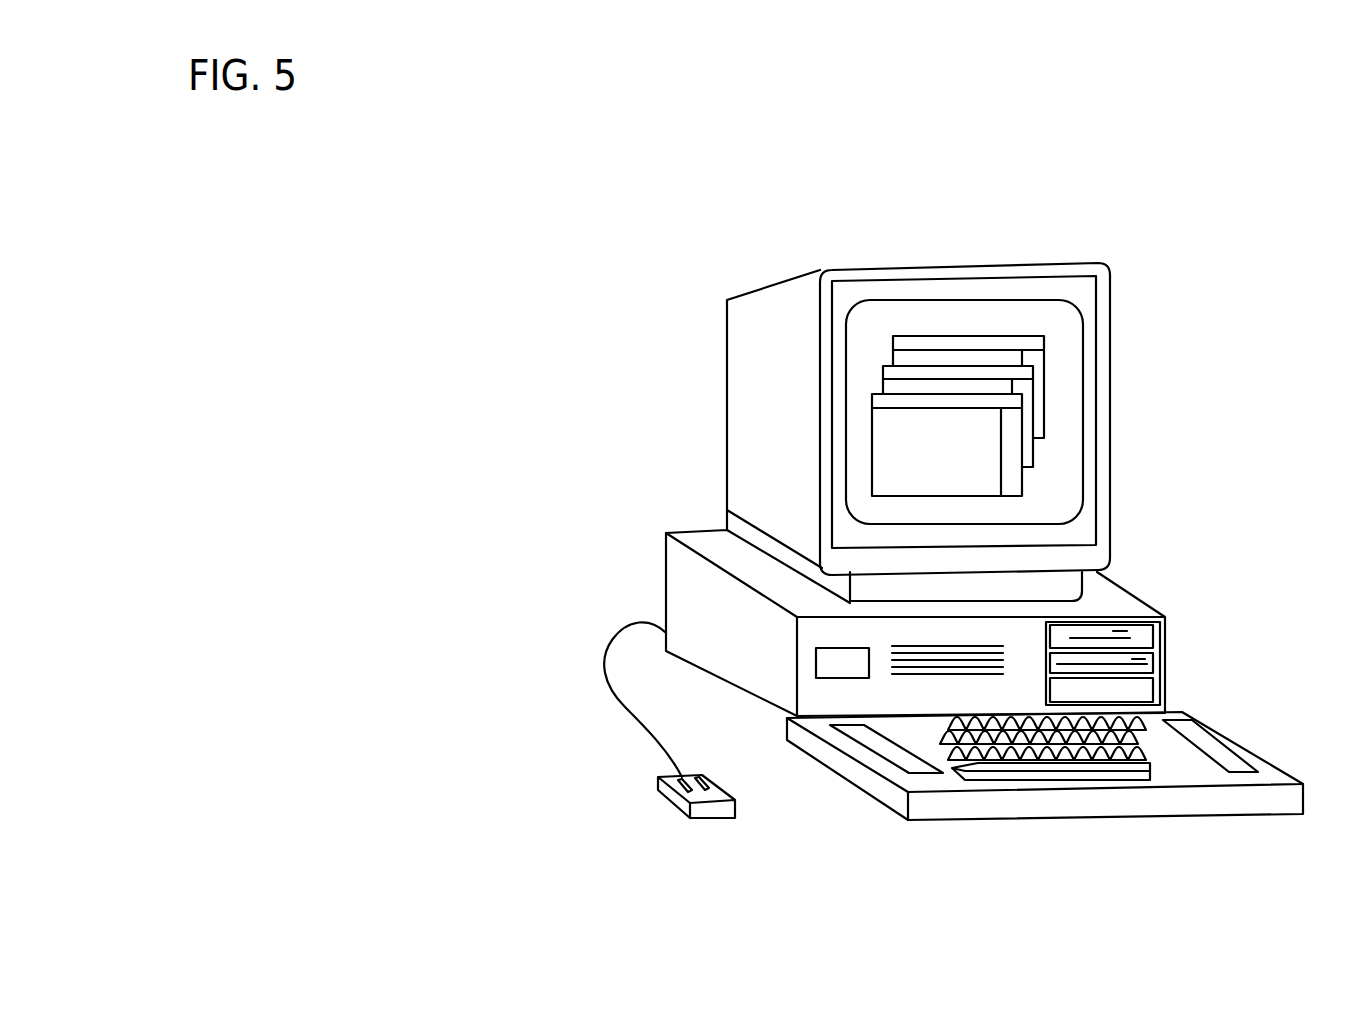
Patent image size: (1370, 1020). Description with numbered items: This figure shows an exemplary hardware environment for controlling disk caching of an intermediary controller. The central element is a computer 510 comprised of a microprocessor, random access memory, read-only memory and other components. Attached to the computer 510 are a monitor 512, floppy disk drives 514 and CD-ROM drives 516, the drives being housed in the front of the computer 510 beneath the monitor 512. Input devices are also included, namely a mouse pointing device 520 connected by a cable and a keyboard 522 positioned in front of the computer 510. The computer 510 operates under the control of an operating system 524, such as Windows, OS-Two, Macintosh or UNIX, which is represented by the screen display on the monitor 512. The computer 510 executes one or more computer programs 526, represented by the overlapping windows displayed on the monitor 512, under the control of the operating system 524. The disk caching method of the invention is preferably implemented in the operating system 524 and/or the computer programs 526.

The computer 510 is at (1130, 592).
The monitor 512 is at (989, 265).
The floppy disk drives 514 is at (1147, 660).
The CD-ROM drives 516 is at (1147, 695).
The mouse pointing device 520 is at (665, 795).
The keyboard 522 is at (1227, 803).
The operating system 524 is at (873, 323).
The computer programs 526 is at (1060, 430).